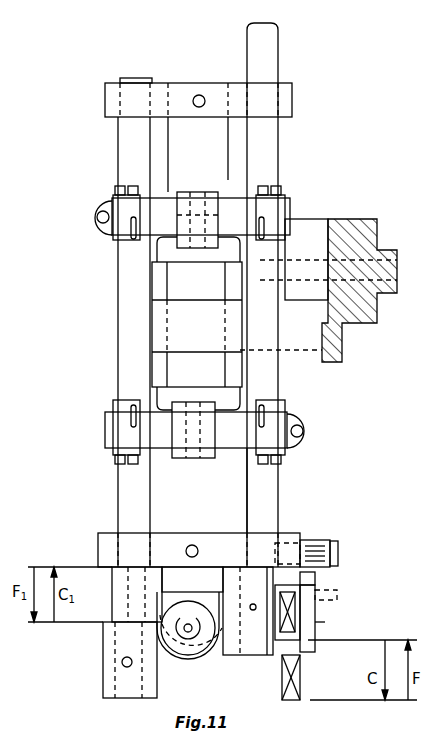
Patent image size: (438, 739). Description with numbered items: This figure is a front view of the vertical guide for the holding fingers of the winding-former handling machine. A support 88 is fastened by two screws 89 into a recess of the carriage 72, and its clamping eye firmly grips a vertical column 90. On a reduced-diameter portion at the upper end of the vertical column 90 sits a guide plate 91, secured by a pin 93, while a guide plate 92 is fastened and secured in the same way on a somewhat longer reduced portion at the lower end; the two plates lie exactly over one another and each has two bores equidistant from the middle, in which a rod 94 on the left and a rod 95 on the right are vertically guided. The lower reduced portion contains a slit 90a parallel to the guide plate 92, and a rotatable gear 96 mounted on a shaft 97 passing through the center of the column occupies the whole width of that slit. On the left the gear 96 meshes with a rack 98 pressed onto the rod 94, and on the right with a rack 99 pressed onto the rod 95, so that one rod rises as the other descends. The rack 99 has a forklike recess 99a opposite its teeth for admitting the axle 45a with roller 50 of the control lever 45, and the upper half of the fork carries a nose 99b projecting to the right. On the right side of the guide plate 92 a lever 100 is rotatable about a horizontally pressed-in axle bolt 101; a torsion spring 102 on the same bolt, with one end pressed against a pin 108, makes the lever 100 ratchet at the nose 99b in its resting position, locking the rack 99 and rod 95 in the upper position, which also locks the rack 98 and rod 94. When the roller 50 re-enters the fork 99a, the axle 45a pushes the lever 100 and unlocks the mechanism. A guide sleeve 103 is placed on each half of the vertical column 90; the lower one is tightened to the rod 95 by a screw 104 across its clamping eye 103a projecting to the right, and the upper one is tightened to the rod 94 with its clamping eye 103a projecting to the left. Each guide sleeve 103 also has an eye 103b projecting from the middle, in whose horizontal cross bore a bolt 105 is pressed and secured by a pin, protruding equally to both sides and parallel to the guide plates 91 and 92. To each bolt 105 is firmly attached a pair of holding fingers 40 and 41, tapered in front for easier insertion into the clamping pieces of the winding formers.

The holding finger 40 is at (128, 418).
The holding finger 41 is at (125, 242).
The control lever 45 is at (330, 622).
The axle 45a is at (318, 624).
The roller 50 is at (292, 642).
The carriage 72 is at (352, 315).
The support 88 is at (277, 347).
The screw 89 is at (288, 278).
The vertical column 90 is at (225, 142).
The slit 90a is at (175, 597).
The guide plate 91 is at (292, 100).
The guide plate 92 is at (98, 548).
The pin 93 is at (199, 95).
The rod 94 is at (118, 483).
The rod 95 is at (262, 487).
The gear 96 is at (176, 650).
The shaft 97 is at (190, 632).
The rack 98 is at (110, 672).
The rack 99 is at (255, 650).
The forklike recess 99a is at (280, 640).
The nose 99b is at (310, 578).
The lever 100 is at (308, 603).
The axle bolt 101 is at (337, 562).
The torsion spring 102 is at (282, 545).
The guide sleeve 103 is at (158, 247).
The clamping eye 103a is at (105, 232).
The eye 103b is at (178, 197).
The screw 104 is at (95, 212).
The bolt 105 is at (105, 430).
The pin 108 is at (334, 547).